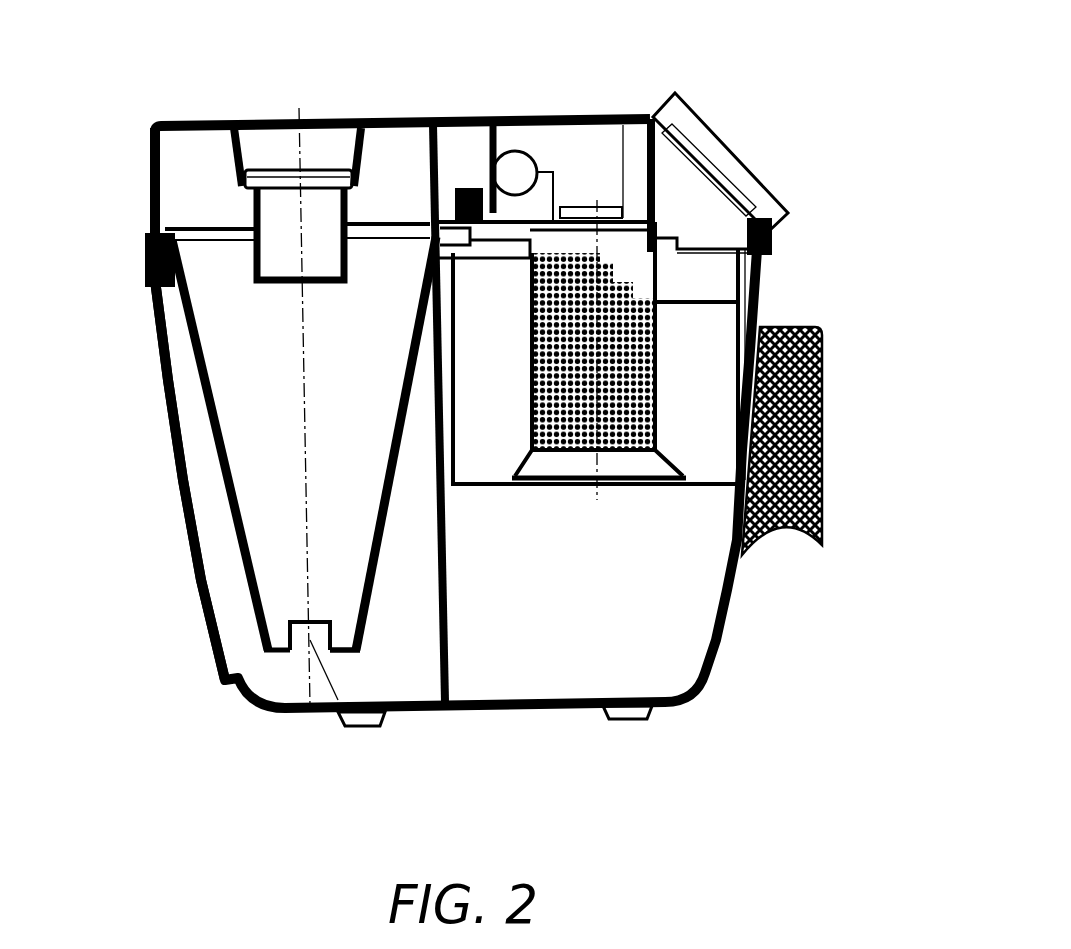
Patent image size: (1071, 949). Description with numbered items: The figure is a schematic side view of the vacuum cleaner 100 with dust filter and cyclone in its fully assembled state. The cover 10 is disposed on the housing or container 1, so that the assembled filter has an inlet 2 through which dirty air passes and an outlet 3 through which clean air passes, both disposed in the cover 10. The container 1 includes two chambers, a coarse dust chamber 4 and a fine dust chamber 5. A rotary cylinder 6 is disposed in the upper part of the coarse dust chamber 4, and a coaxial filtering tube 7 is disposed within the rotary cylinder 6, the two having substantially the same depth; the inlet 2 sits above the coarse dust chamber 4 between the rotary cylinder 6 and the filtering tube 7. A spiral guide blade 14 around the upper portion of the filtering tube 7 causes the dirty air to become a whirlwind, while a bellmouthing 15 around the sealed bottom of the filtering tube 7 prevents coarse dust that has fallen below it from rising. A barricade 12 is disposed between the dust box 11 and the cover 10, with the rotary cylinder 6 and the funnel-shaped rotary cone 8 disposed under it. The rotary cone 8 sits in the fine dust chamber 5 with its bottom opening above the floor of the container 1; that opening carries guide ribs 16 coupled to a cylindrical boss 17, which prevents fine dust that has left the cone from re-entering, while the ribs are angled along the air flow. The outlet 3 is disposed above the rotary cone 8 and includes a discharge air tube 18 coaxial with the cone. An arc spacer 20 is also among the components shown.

The vacuum cleaner 100 is at (503, 80).
The housing or container 1 is at (173, 542).
The inlet for dirty air 2 is at (707, 157).
The outlet for clean air 3 is at (313, 157).
The coarse dust chamber 4 is at (642, 650).
The fine dust chamber 5 is at (240, 642).
The rotary cylinder 6 is at (740, 340).
The filtering tube 7 is at (657, 360).
The rotary cone 8 is at (223, 486).
The cover 10 is at (157, 162).
The dust box 11 is at (157, 372).
The barricade 12 is at (518, 220).
The spiral guide blade 14 is at (707, 290).
The bellmouthing 15 is at (683, 478).
The guide ribs 16 is at (347, 658).
The cylindrical boss 17 is at (303, 632).
The discharge air tube 18 is at (251, 269).
The arc spacer 20 is at (450, 667).